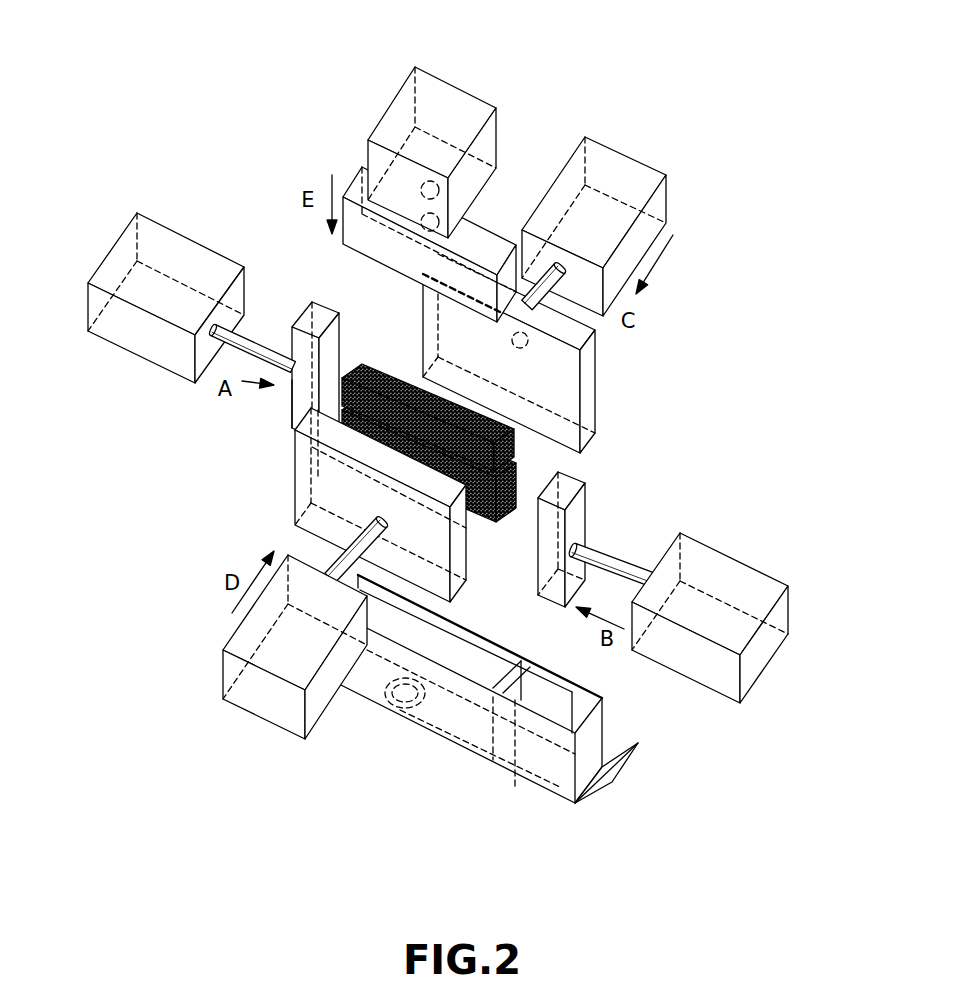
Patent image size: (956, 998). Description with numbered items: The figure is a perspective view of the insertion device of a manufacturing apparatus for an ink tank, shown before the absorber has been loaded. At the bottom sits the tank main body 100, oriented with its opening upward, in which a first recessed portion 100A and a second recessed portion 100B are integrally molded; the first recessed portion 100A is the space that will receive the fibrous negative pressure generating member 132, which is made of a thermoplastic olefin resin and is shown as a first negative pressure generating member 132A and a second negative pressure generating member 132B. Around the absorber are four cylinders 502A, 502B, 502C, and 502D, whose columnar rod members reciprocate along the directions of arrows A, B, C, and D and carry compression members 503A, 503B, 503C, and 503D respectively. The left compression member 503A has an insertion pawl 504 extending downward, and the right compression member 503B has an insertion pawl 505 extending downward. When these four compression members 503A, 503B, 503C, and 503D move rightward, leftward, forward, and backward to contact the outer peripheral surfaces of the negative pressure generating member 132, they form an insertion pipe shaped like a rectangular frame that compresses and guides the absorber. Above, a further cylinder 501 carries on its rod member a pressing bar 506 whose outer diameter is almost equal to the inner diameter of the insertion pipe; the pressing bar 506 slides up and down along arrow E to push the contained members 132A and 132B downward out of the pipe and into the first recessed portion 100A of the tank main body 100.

The tank main body 100 is at (484, 725).
The first recessed portion 100A is at (455, 730).
The second recessed portion 100B is at (545, 763).
The negative pressure generating member 132 is at (541, 443).
The first negative pressure generating member 132A is at (520, 478).
The second negative pressure generating member 132B is at (560, 462).
The cylinder 501 is at (443, 73).
The cylinder 502A is at (136, 213).
The cylinder 502B is at (750, 560).
The cylinder 502C is at (654, 168).
The cylinder 502D is at (222, 660).
The left compression member 503A is at (292, 412).
The right compression member 503B is at (588, 532).
The compression member 503C is at (595, 374).
The compression member 503D is at (298, 513).
The insertion pawl 504 is at (330, 305).
The insertion pawl 505 is at (420, 372).
The pressing bar 506 is at (360, 170).